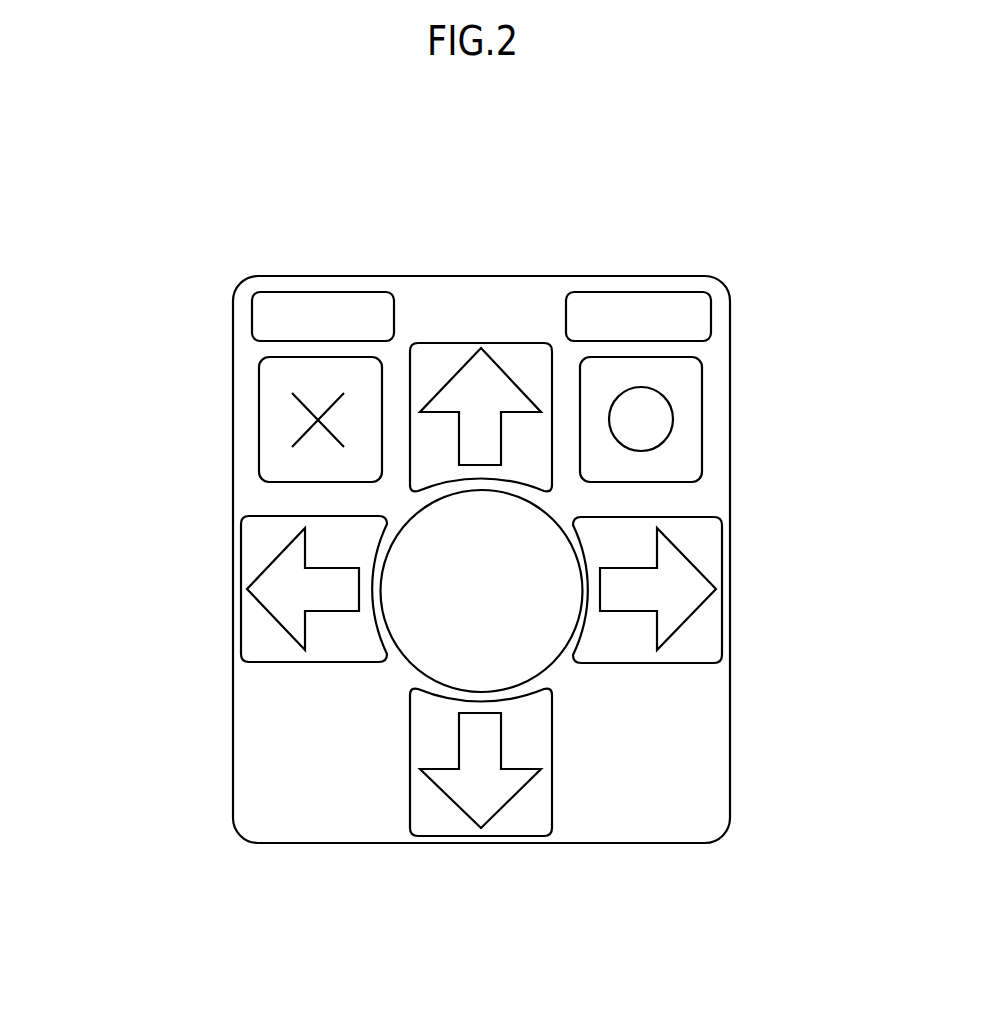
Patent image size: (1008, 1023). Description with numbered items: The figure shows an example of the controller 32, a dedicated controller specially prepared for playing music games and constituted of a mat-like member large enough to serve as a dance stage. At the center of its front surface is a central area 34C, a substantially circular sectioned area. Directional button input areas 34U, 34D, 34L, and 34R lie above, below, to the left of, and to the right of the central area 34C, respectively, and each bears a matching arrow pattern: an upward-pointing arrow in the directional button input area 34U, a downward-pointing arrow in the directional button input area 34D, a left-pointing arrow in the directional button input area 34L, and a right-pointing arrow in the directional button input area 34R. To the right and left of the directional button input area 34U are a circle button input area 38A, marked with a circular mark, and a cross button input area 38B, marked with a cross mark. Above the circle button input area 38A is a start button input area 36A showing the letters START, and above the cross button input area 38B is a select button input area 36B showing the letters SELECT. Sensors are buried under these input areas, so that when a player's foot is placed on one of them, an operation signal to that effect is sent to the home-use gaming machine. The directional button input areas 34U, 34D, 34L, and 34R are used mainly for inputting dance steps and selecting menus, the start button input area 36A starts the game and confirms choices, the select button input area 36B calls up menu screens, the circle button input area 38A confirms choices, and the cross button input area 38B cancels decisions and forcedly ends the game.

The controller 32 is at (310, 843).
The directional button input area 34U is at (481, 348).
The directional button input area 34D is at (465, 836).
The directional button input area 34L is at (241, 557).
The directional button input area 34R is at (730, 560).
The central area 34C is at (546, 667).
The start button input area 36A is at (637, 292).
The select button input area 36B is at (326, 292).
The circle button input area 38A is at (702, 438).
The cross button input area 38B is at (259, 420).